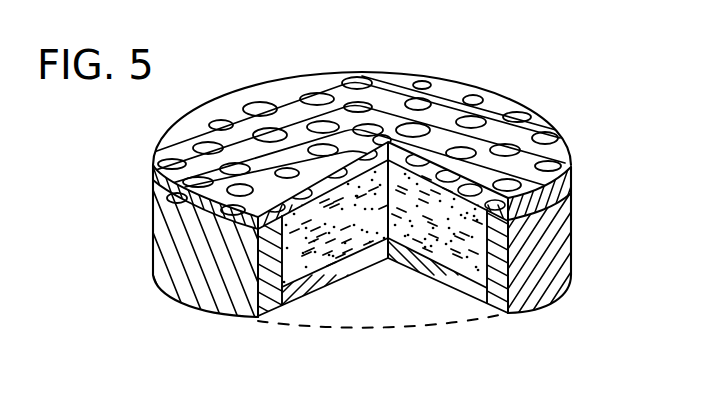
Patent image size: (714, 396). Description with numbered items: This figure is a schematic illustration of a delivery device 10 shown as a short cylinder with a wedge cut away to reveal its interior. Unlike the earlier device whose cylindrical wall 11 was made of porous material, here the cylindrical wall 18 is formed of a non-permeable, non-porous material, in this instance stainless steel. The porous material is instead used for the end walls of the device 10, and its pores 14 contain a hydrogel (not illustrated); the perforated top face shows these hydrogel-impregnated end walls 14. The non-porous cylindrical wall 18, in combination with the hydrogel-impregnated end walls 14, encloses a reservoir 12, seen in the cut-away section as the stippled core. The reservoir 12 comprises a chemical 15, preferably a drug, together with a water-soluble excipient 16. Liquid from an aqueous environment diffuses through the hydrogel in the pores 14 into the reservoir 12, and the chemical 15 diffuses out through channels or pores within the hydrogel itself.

The delivery device 10 is at (402, 66).
The cylindrical wall 11 is at (310, 87).
The reservoir 12 is at (466, 247).
The pores 14 is at (207, 128).
The chemical 15 is at (322, 258).
The excipient 16 is at (293, 263).
The cylindrical wall 18 is at (183, 238).